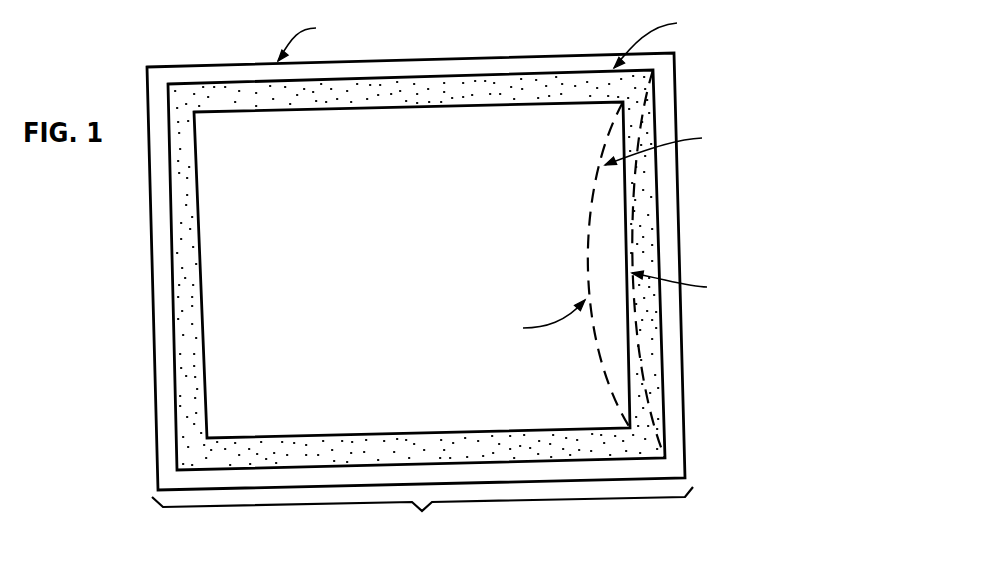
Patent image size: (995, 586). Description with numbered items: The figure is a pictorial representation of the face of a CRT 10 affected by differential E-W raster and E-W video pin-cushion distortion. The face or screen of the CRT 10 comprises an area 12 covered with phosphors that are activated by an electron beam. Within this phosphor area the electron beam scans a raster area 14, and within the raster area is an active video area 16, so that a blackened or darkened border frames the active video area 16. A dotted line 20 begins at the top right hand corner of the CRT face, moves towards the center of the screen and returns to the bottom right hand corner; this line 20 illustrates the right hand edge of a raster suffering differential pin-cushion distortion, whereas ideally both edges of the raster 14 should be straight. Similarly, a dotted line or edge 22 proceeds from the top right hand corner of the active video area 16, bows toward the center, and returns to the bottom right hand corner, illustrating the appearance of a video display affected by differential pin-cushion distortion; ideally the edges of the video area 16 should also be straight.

The CRT 10 is at (129, 327).
The phosphor area 12 is at (422, 279).
The raster area 14 is at (642, 378).
The active video area 16 is at (551, 406).
The dotted line 20 is at (628, 198).
The dotted line or edge 22 is at (592, 232).